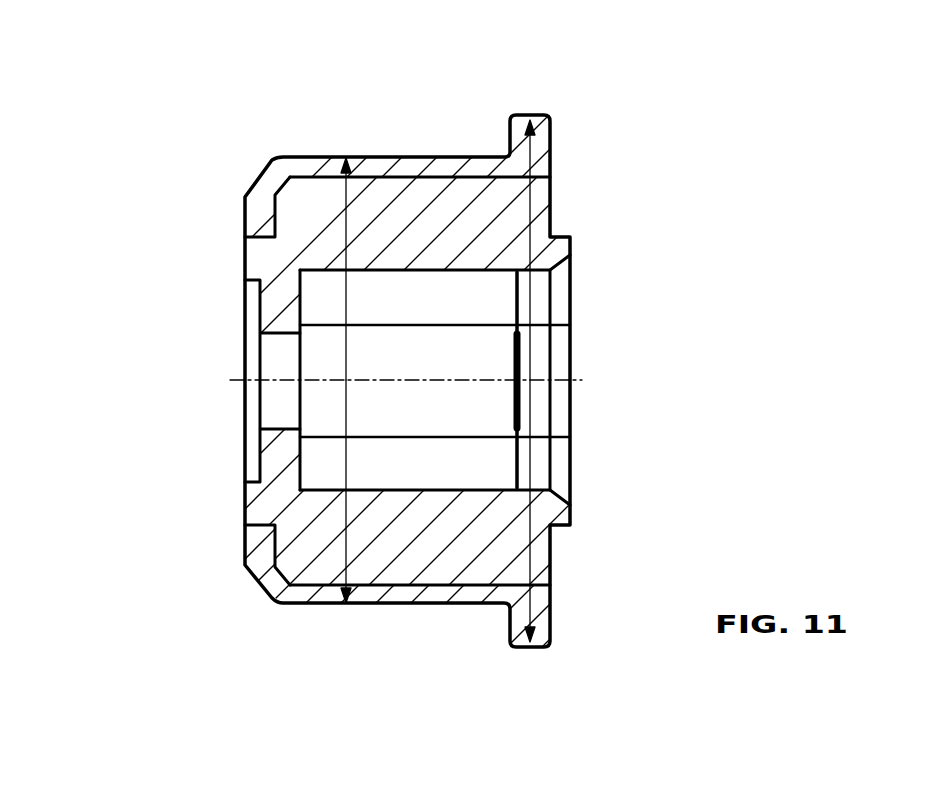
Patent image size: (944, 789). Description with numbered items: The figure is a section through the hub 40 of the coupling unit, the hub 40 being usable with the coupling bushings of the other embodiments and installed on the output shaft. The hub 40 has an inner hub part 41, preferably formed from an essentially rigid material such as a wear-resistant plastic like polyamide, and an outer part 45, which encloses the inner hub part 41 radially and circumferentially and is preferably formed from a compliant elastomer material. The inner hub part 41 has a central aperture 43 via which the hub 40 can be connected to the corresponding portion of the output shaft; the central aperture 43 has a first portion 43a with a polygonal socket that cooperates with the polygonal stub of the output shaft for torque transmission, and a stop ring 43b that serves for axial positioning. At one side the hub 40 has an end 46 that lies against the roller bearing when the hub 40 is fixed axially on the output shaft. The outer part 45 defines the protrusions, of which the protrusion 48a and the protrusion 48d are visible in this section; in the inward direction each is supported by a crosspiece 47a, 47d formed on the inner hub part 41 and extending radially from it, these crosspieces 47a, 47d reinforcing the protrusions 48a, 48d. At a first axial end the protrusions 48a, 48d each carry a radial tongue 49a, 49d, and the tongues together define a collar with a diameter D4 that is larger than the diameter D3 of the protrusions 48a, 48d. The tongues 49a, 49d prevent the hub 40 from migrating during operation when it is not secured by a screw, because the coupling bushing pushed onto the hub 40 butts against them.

The hub 40 is at (152, 210).
The inner hub part 41 is at (513, 218).
The central aperture 43 is at (600, 362).
The first portion 43a is at (406, 292).
The stop ring 43b is at (280, 456).
The outer part 45 is at (292, 603).
The end 46 is at (570, 242).
The crosspiece 47a is at (518, 191).
The crosspiece 47d is at (507, 550).
The protrusion 48a is at (309, 167).
The protrusion 48d is at (378, 604).
The radial tongue 49a is at (527, 113).
The radial tongue 49d is at (548, 648).
The diameter of the protrusions D3 is at (365, 359).
The diameter of the collar D4 is at (529, 358).